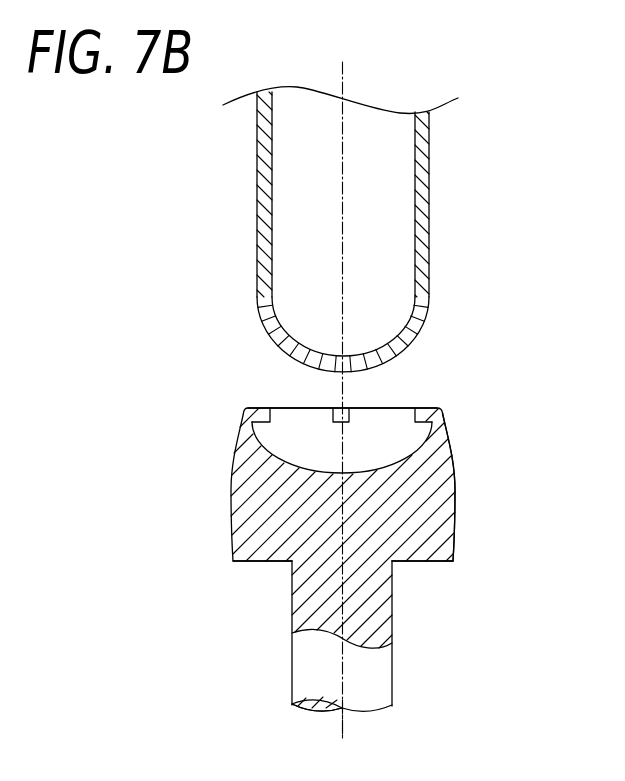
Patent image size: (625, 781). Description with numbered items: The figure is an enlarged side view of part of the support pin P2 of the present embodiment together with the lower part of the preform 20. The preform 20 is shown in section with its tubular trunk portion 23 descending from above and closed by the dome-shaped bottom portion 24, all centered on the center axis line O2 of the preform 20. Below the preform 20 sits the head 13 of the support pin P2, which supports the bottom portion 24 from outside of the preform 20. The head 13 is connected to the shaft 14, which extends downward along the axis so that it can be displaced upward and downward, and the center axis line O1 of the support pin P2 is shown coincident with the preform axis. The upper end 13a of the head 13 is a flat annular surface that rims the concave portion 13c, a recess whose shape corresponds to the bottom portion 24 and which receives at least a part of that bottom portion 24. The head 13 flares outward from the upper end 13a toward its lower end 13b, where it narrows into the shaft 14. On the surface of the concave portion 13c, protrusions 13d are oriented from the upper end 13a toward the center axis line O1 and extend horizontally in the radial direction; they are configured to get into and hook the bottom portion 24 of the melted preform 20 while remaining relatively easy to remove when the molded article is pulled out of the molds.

The preform 20 is at (330, 229).
The trunk portion 23 is at (420, 202).
The bottom portion 24 is at (372, 352).
The head 13 is at (340, 486).
The upper end 13a is at (255, 408).
The lower end 13b is at (255, 562).
The concave portion 13c is at (365, 470).
The protrusion 13d is at (287, 408).
The shaft 14 is at (372, 675).
The support pin P2 is at (468, 505).
The center axis line of the support pin O1 is at (349, 733).
The center axis line of the preform O2 is at (349, 383).